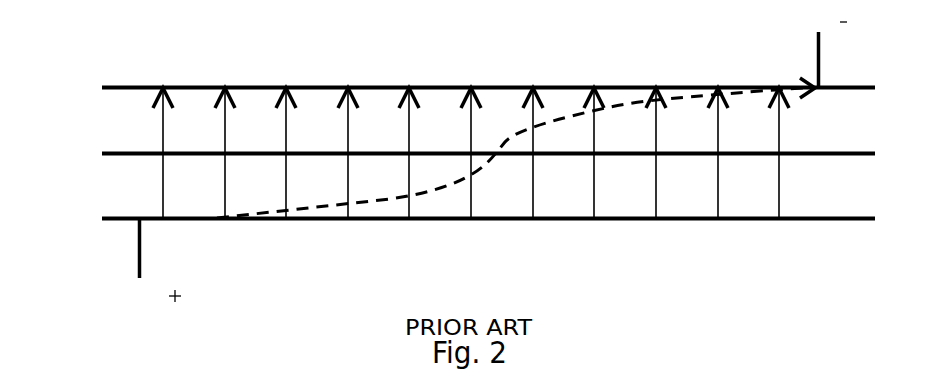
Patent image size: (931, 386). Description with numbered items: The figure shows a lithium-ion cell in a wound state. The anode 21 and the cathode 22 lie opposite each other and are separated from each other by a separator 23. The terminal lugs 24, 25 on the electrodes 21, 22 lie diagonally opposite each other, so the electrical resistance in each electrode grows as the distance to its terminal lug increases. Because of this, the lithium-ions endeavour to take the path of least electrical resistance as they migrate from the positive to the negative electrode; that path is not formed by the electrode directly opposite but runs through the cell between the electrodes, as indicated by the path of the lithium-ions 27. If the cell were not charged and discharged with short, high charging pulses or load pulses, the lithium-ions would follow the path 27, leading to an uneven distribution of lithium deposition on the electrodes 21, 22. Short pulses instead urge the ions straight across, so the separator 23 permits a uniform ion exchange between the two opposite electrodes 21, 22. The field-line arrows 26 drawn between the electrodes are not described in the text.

The anode 21 is at (127, 87).
The cathode 22 is at (327, 218).
The separator 23 is at (843, 153).
The terminal lug 24 is at (820, 72).
The terminal lug 25 is at (142, 240).
The electric field lines 26 is at (163, 184).
The path of the lithium-ions 27 is at (445, 185).